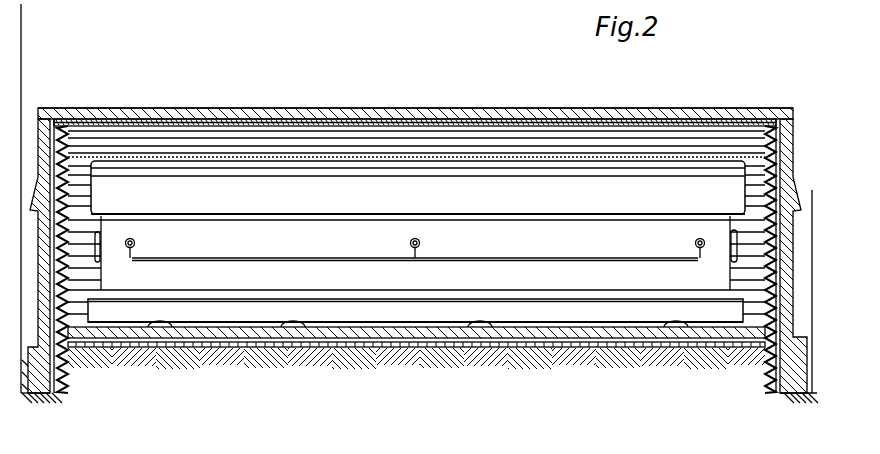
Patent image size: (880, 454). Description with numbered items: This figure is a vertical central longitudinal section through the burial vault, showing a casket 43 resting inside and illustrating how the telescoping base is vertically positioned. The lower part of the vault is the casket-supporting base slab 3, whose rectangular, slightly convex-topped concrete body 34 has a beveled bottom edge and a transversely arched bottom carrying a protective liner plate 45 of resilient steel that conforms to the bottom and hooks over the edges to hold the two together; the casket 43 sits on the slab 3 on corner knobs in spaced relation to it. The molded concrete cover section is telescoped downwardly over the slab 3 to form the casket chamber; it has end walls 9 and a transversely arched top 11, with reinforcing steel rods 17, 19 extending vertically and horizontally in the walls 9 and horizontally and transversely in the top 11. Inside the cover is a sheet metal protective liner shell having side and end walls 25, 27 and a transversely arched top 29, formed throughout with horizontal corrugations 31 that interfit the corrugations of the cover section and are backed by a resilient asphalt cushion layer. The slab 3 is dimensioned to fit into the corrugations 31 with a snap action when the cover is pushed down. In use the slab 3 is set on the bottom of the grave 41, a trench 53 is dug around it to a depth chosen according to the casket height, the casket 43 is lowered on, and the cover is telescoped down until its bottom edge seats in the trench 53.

The base slab 3 is at (398, 65).
The end walls 9 is at (40, 126).
The top 11 is at (633, 108).
The reinforcing steel rods 17 is at (140, 116).
The reinforcing steel rods 19 is at (300, 115).
The side walls 25 is at (348, 153).
The end walls 27 is at (70, 196).
The top 29 is at (450, 132).
The horizontal corrugations 31 is at (555, 154).
The concrete body 34 is at (343, 340).
The grave 41 is at (22, 41).
The casket 43 is at (415, 246).
The protective liner plate 45 is at (530, 347).
The trench 53 is at (66, 402).